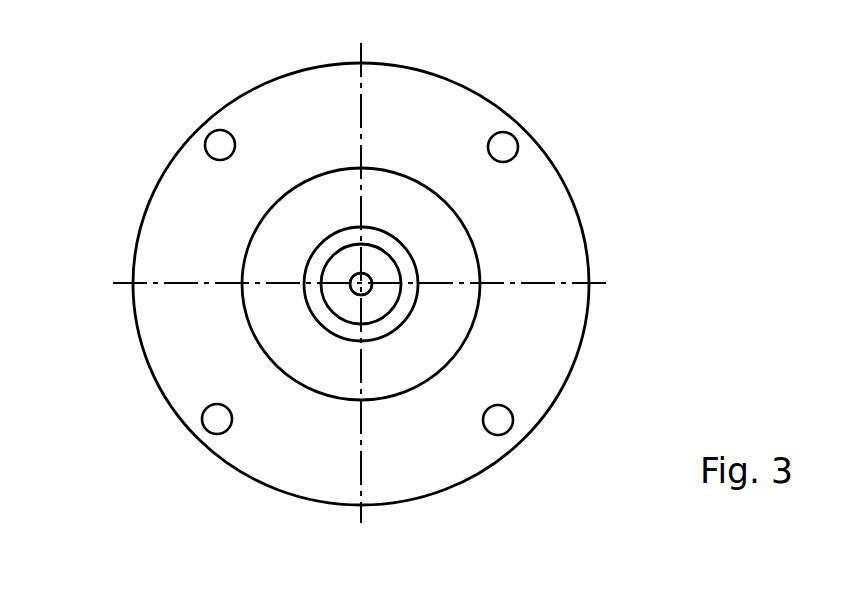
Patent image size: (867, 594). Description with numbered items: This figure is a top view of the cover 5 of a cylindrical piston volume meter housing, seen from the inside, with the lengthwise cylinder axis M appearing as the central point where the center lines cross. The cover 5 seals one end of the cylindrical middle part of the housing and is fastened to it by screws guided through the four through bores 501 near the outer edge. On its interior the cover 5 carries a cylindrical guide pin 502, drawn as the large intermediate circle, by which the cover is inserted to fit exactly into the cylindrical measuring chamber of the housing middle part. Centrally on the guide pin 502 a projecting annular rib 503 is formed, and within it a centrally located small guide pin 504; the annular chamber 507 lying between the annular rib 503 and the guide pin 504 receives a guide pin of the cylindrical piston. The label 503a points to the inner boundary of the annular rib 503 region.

The lengthwise cylinder axis M is at (359, 282).
The cover 5 is at (580, 215).
The through bores 501 is at (512, 147).
The cylindrical guide pin 502 is at (395, 173).
The annular rib 503 is at (417, 293).
The hub inner face 503a is at (317, 266).
The small guide pin 504 is at (347, 289).
The annular chamber 507 is at (349, 307).